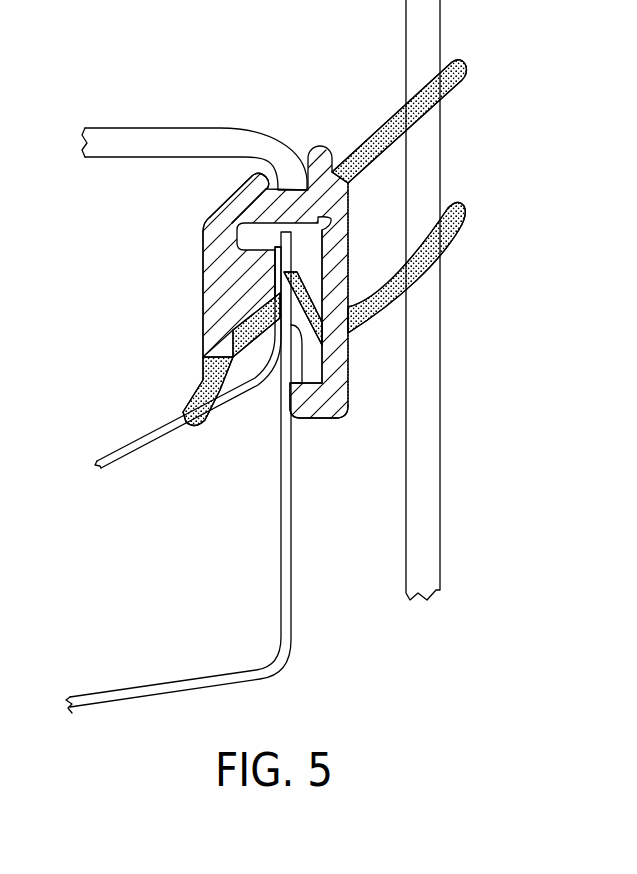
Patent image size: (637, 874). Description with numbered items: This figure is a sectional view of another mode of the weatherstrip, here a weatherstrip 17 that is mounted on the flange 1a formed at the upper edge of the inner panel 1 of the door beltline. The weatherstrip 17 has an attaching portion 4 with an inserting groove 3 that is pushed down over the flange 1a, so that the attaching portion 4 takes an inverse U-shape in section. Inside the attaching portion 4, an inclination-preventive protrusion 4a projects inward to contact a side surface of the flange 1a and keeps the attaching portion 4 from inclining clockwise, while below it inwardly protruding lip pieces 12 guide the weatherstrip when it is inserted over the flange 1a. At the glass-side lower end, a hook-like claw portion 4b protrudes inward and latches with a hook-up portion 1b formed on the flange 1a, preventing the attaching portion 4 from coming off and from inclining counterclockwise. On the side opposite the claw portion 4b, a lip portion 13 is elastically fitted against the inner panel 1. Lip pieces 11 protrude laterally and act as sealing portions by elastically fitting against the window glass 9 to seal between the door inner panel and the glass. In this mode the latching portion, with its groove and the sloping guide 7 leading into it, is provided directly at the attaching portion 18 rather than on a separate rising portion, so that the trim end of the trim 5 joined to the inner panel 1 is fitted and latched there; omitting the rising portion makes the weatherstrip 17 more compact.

The inner panel 1 is at (226, 348).
The flange 1a is at (277, 240).
The hook-up portion 1b is at (300, 370).
The inserting groove 3 is at (252, 365).
The attaching portion 4 is at (213, 332).
The inclination-preventive protrusion 4a is at (290, 267).
The claw portion 4b is at (314, 403).
The trim 5 is at (243, 140).
The sloping guide 7 is at (230, 197).
The window glass 9 is at (441, 410).
The lip pieces 11 is at (395, 132).
The lip pieces 12 is at (292, 300).
The lip portion 13 is at (200, 397).
The weatherstrip 17 is at (199, 216).
The attaching portion 18 is at (210, 258).